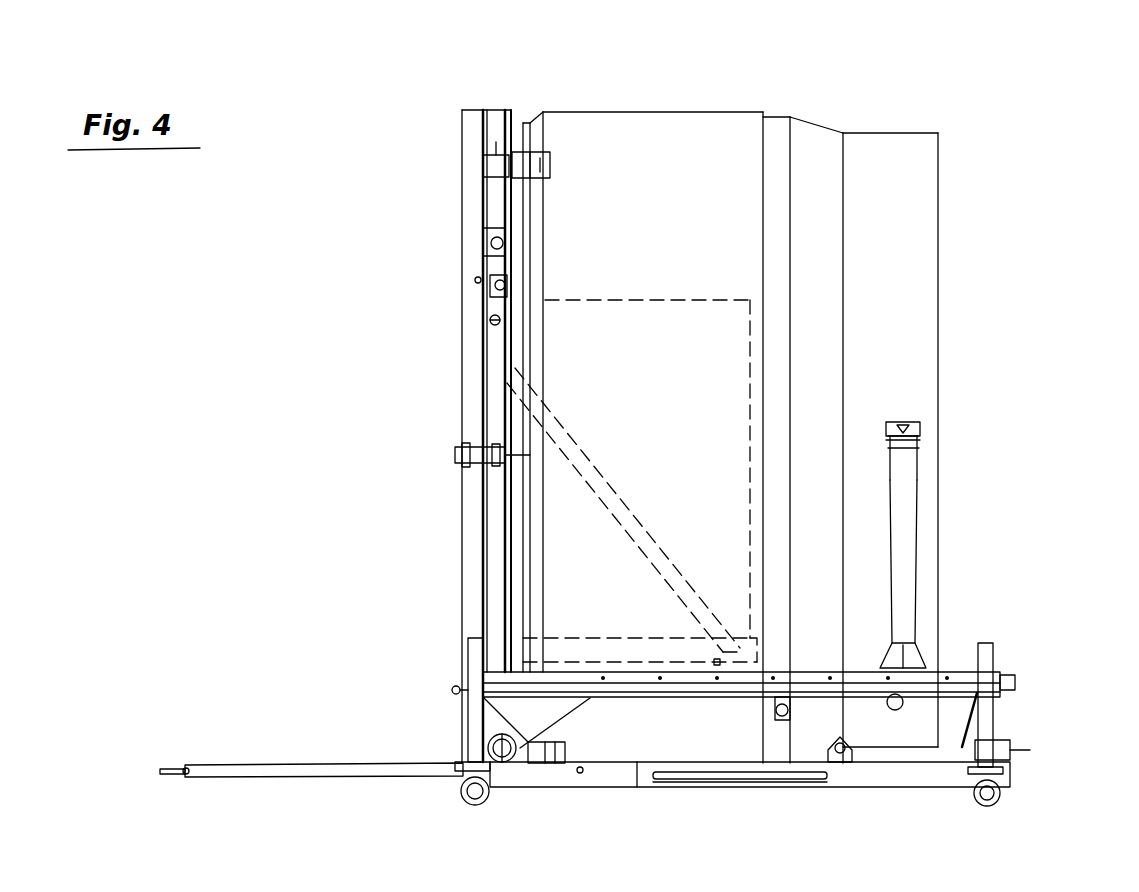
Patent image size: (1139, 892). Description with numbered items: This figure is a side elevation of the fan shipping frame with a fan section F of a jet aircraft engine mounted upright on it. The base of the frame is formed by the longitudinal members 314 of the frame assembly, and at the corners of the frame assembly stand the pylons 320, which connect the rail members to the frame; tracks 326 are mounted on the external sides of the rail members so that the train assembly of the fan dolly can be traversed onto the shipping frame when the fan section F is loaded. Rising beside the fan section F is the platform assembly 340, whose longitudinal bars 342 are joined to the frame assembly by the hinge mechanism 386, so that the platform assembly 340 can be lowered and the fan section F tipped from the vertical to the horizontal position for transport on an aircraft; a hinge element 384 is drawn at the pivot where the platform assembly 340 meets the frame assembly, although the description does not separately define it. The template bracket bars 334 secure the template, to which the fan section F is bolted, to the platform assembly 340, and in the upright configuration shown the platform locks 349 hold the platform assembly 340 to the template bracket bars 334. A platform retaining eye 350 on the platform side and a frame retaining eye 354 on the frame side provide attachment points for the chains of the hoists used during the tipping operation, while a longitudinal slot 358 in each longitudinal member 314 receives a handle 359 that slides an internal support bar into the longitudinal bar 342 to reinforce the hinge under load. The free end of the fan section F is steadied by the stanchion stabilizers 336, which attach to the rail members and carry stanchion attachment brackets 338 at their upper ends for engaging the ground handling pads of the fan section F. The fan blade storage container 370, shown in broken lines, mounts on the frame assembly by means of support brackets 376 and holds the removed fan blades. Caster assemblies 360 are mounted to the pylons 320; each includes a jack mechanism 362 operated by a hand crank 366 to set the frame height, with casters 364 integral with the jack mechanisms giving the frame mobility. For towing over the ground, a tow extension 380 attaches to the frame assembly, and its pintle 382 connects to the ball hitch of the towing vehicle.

The fan section F is at (708, 143).
The longitudinal member 314 is at (660, 763).
The pylon 320 is at (552, 165).
The track 326 is at (965, 672).
The template bracket bar 334 is at (497, 542).
The stanchion stabilizer 336 is at (905, 540).
The stanchion attachment bracket 338 is at (920, 428).
The platform assembly 340 is at (450, 237).
The longitudinal bar 342 is at (467, 158).
The platform lock 349 is at (455, 455).
The platform retaining eye 350 is at (507, 243).
The frame retaining eye 354 is at (840, 760).
The longitudinal slot 358 is at (752, 775).
The handle 359 is at (817, 778).
The caster assembly 360 is at (455, 805).
The jack mechanism 362 is at (465, 735).
The caster 364 is at (470, 806).
The hand crank 366 is at (452, 690).
The fan blade storage container 370 is at (643, 300).
The support bracket 376 is at (597, 467).
The tow extension 380 is at (265, 768).
The pintle 382 is at (173, 765).
The pivot hub 384 is at (520, 770).
The hinge mechanism 386 is at (517, 760).